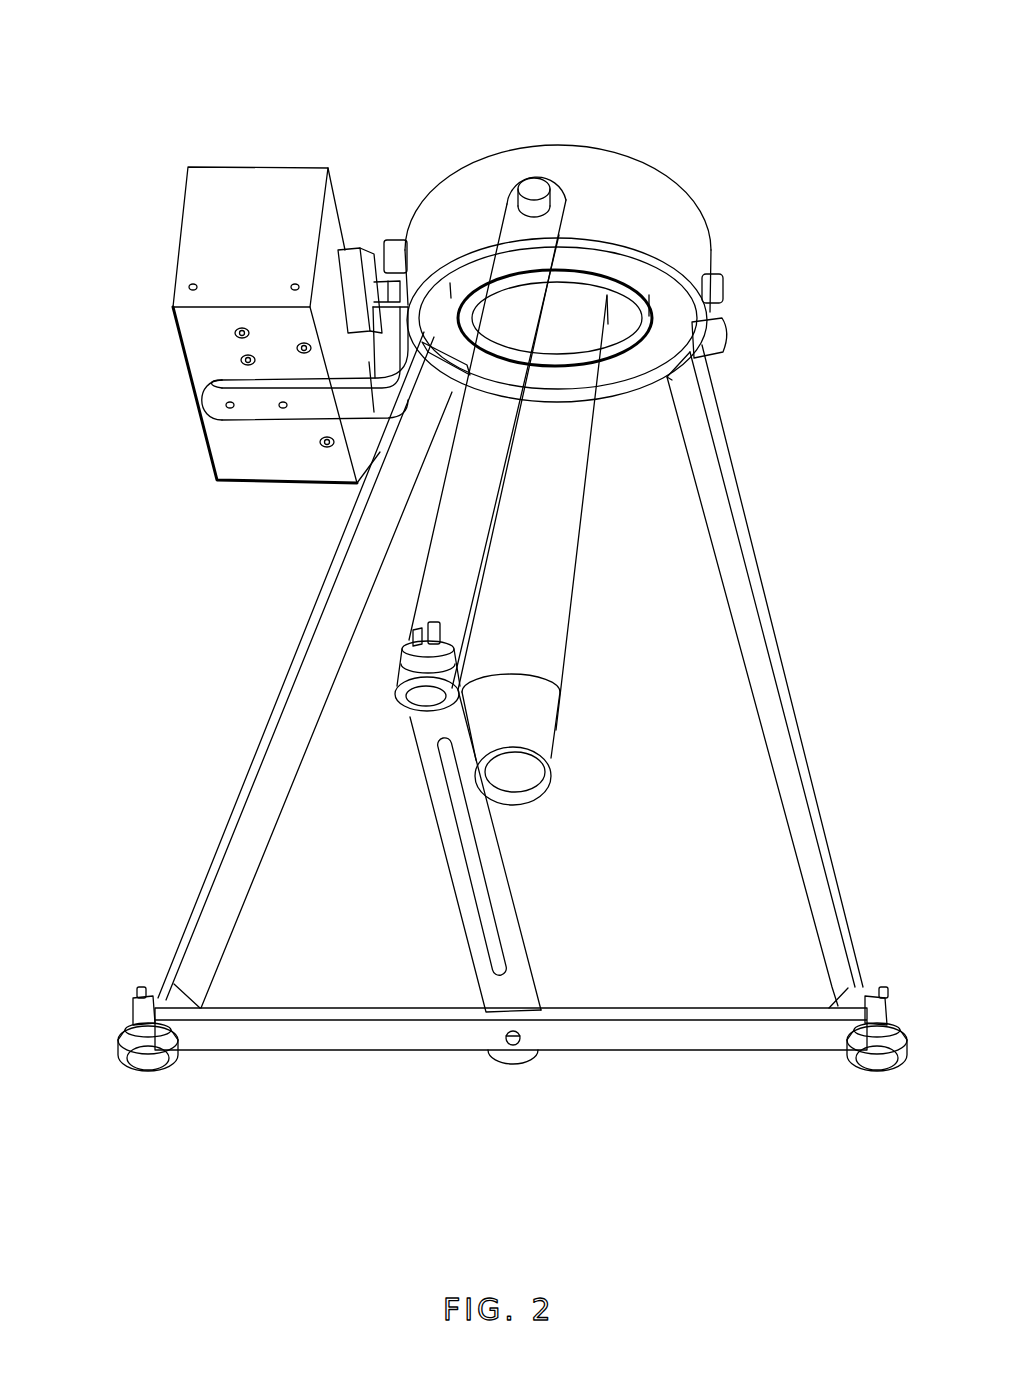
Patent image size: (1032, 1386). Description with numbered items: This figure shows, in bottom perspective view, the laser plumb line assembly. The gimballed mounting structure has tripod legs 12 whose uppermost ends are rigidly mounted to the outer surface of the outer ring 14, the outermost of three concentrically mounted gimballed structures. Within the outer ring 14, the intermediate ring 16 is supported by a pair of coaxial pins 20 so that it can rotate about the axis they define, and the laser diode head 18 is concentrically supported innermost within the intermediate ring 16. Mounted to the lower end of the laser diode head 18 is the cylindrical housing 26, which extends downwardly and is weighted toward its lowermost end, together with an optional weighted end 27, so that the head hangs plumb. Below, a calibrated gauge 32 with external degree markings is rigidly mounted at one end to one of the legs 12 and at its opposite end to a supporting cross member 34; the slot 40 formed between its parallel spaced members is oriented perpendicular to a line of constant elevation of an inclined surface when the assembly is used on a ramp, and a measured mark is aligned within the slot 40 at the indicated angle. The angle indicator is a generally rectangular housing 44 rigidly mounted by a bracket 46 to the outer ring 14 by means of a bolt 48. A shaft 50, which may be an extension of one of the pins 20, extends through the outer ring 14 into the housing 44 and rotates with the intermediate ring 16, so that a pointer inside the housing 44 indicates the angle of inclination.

The tripod legs 12 is at (762, 597).
The outer ring 14 is at (627, 203).
The intermediate ring 16 is at (647, 347).
The laser diode head 18 is at (600, 325).
The coaxial pins 20 is at (457, 378).
The cylindrical housing 26 is at (600, 443).
The weighted end 27 is at (560, 740).
The calibrated gauge 32 is at (553, 990).
The cross member 34 is at (700, 1052).
The slot 40 is at (470, 845).
The housing 44 is at (202, 240).
The bracket 46 is at (225, 410).
The bolt 48 is at (394, 245).
The shaft 50 is at (387, 287).